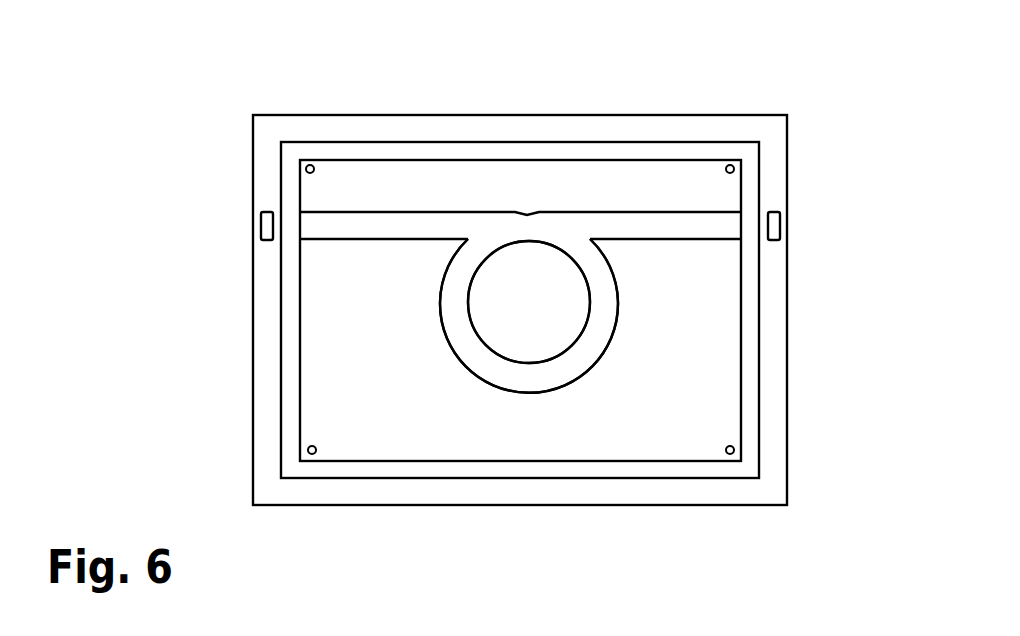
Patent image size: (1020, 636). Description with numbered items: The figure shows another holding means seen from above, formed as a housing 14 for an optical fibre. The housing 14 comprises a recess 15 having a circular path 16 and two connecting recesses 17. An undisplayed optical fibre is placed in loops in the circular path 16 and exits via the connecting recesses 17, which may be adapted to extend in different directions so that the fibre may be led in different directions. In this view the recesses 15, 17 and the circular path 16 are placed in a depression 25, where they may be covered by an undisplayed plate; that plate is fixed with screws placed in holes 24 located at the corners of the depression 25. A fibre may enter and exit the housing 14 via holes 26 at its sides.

The housing 14 is at (767, 432).
The recess 15 is at (563, 368).
The circular path 16 is at (529, 316).
The connecting recesses 17 is at (385, 227).
The holes 24 is at (318, 442).
The depression 25 is at (386, 430).
The holes 26 is at (258, 230).